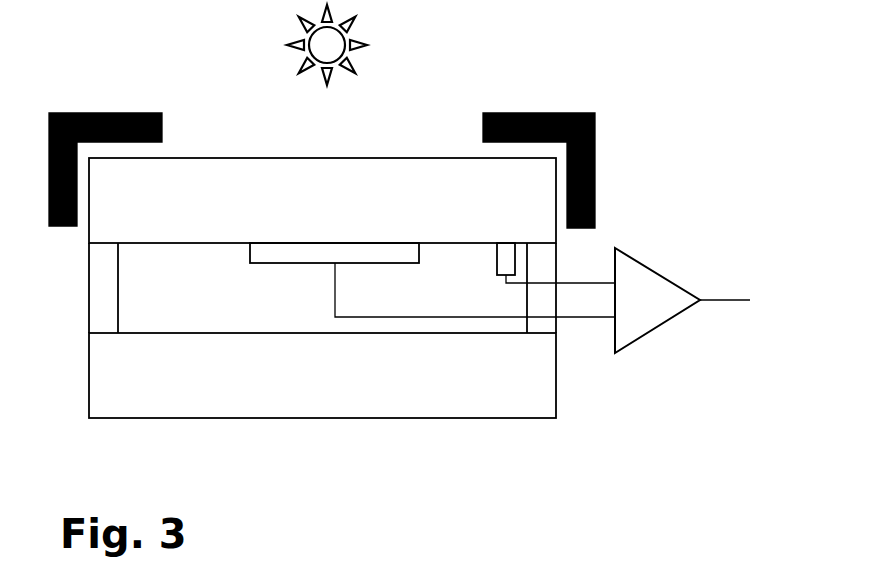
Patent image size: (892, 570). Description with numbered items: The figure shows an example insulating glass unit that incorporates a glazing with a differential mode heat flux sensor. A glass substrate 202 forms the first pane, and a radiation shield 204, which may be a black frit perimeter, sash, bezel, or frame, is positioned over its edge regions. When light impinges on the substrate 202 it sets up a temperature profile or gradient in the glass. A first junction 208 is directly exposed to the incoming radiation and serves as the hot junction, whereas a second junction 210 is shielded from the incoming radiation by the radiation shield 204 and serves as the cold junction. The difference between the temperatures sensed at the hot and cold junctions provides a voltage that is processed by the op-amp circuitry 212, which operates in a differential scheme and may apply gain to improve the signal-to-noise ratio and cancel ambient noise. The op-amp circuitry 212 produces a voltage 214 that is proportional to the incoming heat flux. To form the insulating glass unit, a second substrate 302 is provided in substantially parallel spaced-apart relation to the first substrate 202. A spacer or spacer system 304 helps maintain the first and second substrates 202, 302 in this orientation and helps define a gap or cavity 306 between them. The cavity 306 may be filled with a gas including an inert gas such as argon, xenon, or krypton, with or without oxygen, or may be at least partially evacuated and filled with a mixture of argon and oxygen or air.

The glass substrate 202 is at (323, 158).
The radiation shield 204 is at (597, 126).
The first junction 208 is at (275, 263).
The second junction 210 is at (495, 260).
The op-amp circuitry 212 is at (638, 261).
The voltage 214 is at (732, 300).
The second substrate 302 is at (323, 418).
The spacer system 304 is at (89, 289).
The cavity 306 is at (181, 299).